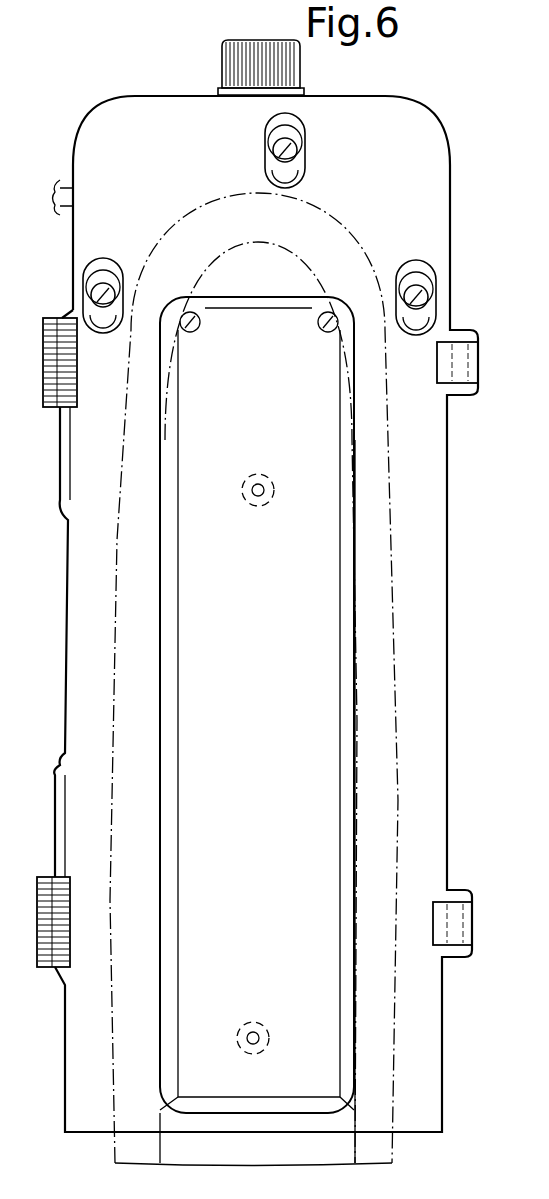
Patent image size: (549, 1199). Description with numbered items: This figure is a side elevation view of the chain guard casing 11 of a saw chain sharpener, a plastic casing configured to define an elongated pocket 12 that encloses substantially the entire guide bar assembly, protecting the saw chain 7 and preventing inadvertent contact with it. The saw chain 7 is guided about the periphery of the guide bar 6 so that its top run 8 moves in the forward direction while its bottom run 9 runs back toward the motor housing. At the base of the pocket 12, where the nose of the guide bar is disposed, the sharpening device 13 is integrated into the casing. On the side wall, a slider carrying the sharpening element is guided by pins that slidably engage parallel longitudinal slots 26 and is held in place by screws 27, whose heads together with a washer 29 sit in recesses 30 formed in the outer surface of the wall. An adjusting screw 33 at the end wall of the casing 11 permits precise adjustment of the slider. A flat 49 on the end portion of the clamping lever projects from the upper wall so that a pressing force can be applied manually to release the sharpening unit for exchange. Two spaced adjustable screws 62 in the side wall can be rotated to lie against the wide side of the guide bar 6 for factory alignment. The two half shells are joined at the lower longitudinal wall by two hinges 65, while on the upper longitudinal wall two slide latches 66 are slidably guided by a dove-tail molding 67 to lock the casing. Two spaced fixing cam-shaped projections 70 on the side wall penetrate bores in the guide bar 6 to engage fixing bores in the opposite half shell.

The guide bar 6 is at (259, 1159).
The saw chain 7 is at (392, 1147).
The top run 8 is at (113, 665).
The bottom run 9 is at (357, 712).
The chain guard casing 11 is at (86, 122).
The pocket 12 is at (135, 105).
The sharpening device 13 is at (445, 155).
The longitudinal slots 26 is at (292, 128).
The screws 27 is at (296, 152).
The washer 29 is at (300, 140).
The recesses 30 is at (300, 175).
The adjusting screw 33 is at (226, 62).
The flat 49 is at (56, 183).
The adjustable screws 62 is at (313, 337).
The hinges 65 is at (478, 352).
The slide latches 66 is at (50, 396).
The dove-tail molding 67 is at (60, 490).
The fixing cam-shaped projections 70 is at (262, 482).